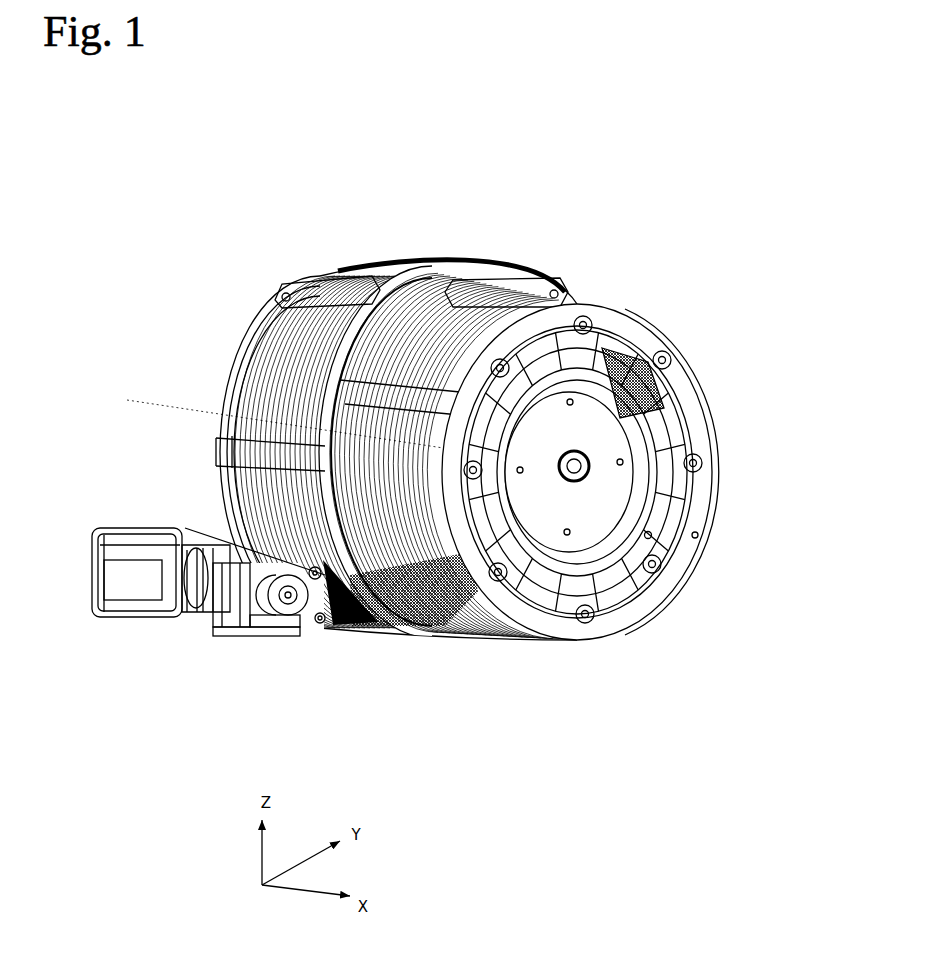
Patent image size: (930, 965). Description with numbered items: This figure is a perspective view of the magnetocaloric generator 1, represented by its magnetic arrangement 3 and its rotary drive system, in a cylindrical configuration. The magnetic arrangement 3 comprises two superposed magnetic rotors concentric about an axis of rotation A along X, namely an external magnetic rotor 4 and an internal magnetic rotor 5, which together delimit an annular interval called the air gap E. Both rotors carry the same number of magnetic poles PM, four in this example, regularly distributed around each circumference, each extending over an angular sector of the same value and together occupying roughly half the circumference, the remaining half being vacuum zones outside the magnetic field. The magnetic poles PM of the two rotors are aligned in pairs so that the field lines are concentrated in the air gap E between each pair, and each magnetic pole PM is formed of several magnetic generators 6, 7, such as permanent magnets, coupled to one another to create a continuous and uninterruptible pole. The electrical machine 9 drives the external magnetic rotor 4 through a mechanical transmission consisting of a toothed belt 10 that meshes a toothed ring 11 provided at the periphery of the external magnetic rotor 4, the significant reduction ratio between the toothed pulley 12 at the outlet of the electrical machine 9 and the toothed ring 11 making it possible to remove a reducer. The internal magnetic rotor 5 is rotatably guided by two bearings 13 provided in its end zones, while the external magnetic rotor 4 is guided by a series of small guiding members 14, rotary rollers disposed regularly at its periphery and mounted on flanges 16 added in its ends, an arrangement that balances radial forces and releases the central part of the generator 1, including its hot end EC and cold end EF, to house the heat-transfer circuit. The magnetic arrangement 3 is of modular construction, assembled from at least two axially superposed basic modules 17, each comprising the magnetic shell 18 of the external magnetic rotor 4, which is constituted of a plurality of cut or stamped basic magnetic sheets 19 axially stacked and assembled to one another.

The magnetocaloric generator 1 is at (536, 195).
The magnetic arrangement 3 is at (619, 297).
The external magnetic rotor 4 is at (674, 397).
The internal magnetic rotor 5 is at (602, 521).
The magnetic generator 6 is at (605, 520).
The magnetic generator 7 is at (670, 504).
The electrical machine 9 is at (145, 620).
The toothed belt 10 is at (322, 562).
The toothed ring 11 is at (345, 627).
The toothed pulley 12 is at (250, 625).
The bearing 13 is at (556, 458).
The guiding member 14 is at (614, 297).
The flange 16 is at (604, 333).
The basic module 17 is at (332, 296).
The magnetic shell 18 is at (266, 305).
The basic magnetic sheet 19 is at (181, 310).
The magnetic pole PM is at (610, 378).
The cold end EF is at (207, 380).
The hot end EC is at (717, 549).
The axis of rotation A is at (335, 425).
The air gap E is at (480, 514).